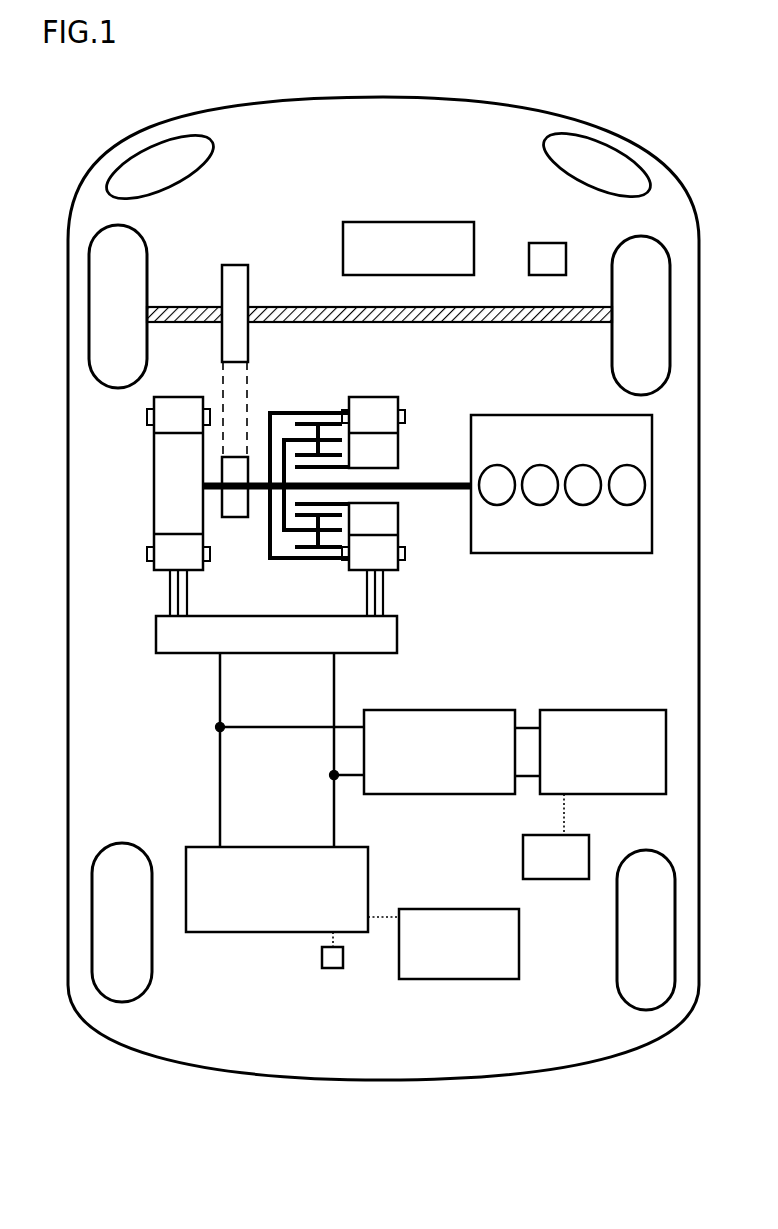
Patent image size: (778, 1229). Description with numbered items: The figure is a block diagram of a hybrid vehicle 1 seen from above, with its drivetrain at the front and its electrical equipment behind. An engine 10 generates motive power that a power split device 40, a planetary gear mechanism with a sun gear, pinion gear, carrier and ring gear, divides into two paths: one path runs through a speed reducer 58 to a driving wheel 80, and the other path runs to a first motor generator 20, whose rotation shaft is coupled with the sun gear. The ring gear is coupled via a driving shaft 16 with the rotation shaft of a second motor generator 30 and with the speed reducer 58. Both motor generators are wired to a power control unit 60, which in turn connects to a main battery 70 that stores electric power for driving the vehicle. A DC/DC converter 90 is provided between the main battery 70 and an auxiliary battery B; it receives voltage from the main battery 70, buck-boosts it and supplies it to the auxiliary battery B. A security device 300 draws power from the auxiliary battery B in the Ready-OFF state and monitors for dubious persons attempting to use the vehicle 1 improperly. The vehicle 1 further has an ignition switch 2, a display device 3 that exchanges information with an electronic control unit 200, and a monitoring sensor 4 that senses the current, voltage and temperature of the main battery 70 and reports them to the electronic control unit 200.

The vehicle 1 is at (375, 64).
The ignition switch 2 is at (549, 243).
The display device 3 is at (410, 222).
The monitoring sensor 4 is at (336, 968).
The engine 10 is at (565, 415).
The driving shaft 16 is at (259, 492).
The first motor generator 20 is at (373, 397).
The second motor generator 30 is at (181, 397).
The power split device 40 is at (313, 395).
The speed reducer 58 is at (236, 265).
The power control unit 60 is at (156, 633).
The main battery 70 is at (276, 932).
The driving wheel 80 is at (143, 237).
The DC/DC converter 90 is at (450, 710).
The electronic control unit 200 is at (456, 980).
The security device 300 is at (557, 879).
The auxiliary battery B is at (597, 710).